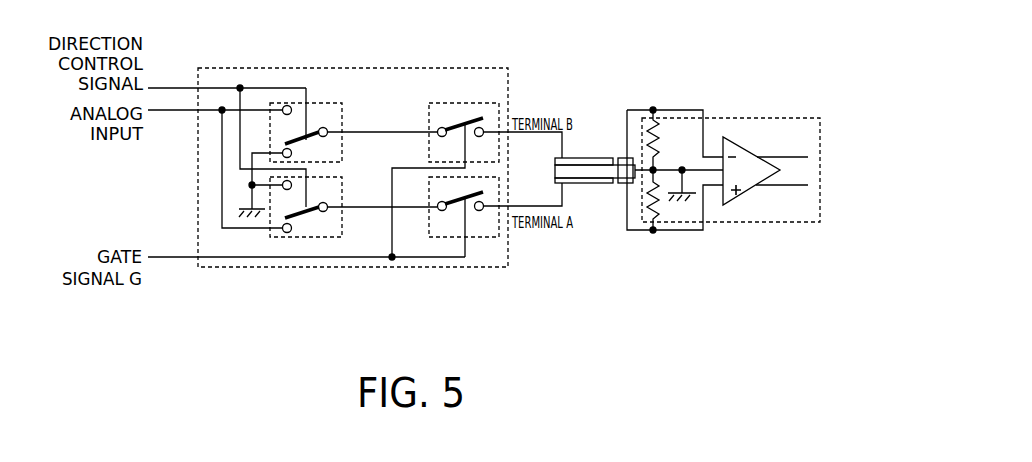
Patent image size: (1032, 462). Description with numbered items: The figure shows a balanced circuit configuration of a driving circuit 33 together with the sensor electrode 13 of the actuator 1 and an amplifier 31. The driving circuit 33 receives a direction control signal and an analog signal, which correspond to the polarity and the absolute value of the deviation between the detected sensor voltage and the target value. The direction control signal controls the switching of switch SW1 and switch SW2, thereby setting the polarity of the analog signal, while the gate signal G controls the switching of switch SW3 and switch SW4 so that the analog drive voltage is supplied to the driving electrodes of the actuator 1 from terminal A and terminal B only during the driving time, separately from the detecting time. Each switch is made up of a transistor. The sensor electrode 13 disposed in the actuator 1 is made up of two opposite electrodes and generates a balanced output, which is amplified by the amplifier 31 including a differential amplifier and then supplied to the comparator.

The actuator 1 is at (592, 147).
The sensor electrode 13 is at (624, 158).
The amplifier 31 is at (752, 118).
The driving circuit 33 is at (403, 68).
The switch 1 SW1 is at (328, 103).
The switch 2 SW2 is at (318, 237).
The switch 3 SW3 is at (468, 103).
The switch 4 SW4 is at (483, 237).